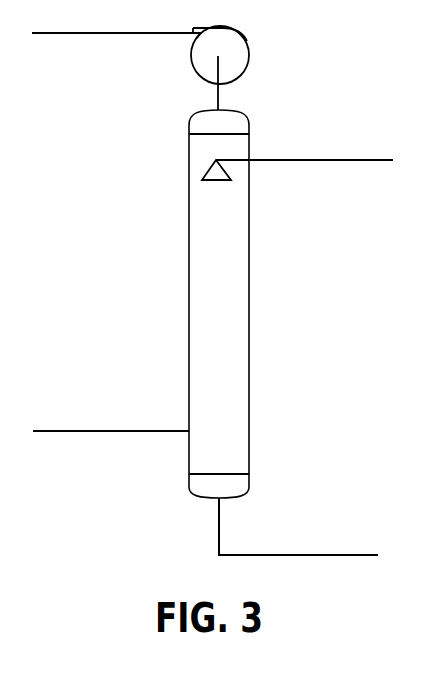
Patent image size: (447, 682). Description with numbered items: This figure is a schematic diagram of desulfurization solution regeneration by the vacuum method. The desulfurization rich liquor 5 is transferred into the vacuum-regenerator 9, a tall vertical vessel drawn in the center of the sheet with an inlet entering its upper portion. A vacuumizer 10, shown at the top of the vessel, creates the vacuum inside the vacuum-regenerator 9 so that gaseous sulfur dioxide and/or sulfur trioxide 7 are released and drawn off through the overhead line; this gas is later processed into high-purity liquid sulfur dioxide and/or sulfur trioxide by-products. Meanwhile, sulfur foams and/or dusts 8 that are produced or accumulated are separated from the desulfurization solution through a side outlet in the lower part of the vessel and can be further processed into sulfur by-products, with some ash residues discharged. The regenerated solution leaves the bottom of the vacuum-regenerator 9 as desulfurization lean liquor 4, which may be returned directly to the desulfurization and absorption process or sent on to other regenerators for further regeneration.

The desulfurization lean liquor 4 is at (325, 541).
The desulfurization rich liquor 5 is at (328, 151).
The gaseous sulfur dioxide and/or sulfur trioxide 7 is at (66, 23).
The sulfur foams and/or dusts 8 is at (69, 417).
The vacuum-regenerator 9 is at (205, 236).
The vacuumizer 10 is at (230, 53).